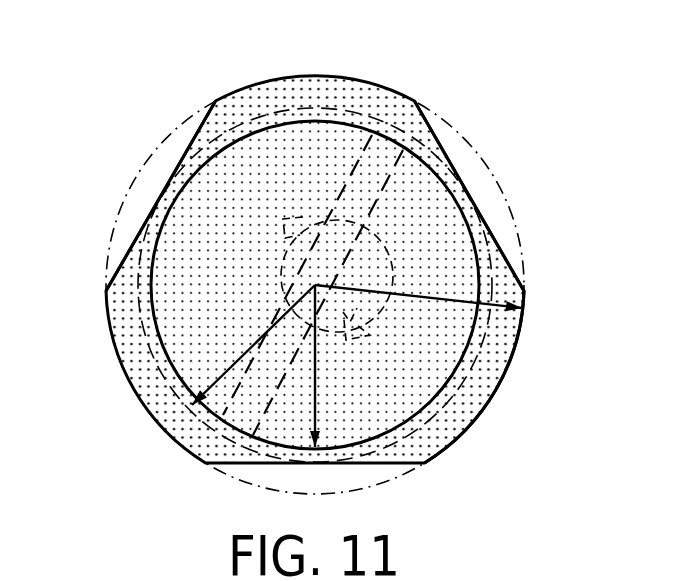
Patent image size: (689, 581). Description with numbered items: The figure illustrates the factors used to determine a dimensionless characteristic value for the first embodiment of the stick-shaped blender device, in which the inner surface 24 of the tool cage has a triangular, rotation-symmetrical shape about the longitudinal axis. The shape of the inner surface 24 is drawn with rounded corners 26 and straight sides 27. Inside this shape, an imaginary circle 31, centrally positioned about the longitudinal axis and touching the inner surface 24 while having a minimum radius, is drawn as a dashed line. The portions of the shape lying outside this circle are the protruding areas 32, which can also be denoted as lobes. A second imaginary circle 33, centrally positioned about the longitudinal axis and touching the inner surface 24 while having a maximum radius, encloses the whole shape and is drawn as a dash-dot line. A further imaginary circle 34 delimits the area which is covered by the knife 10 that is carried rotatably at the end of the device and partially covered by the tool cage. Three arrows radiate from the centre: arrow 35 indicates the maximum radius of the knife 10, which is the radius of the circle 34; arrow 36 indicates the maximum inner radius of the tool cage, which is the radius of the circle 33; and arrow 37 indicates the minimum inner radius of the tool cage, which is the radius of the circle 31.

The knife 10 is at (367, 168).
The inner surface 24 is at (507, 262).
The rounded corners 26 is at (470, 430).
The straight sides 27 is at (130, 250).
The imaginary circle with minimum radius 31 is at (485, 357).
The protruding areas 32 is at (333, 92).
The imaginary circle with maximum radius 33 is at (480, 150).
The imaginary circle delimiting knife area 34 is at (293, 121).
The arrow indicating maximum radius of knife 35 is at (318, 362).
The arrow indicating maximum inner radius of tool cage 36 is at (416, 286).
The arrow indicating minimum inner radius of tool cage 37 is at (250, 346).